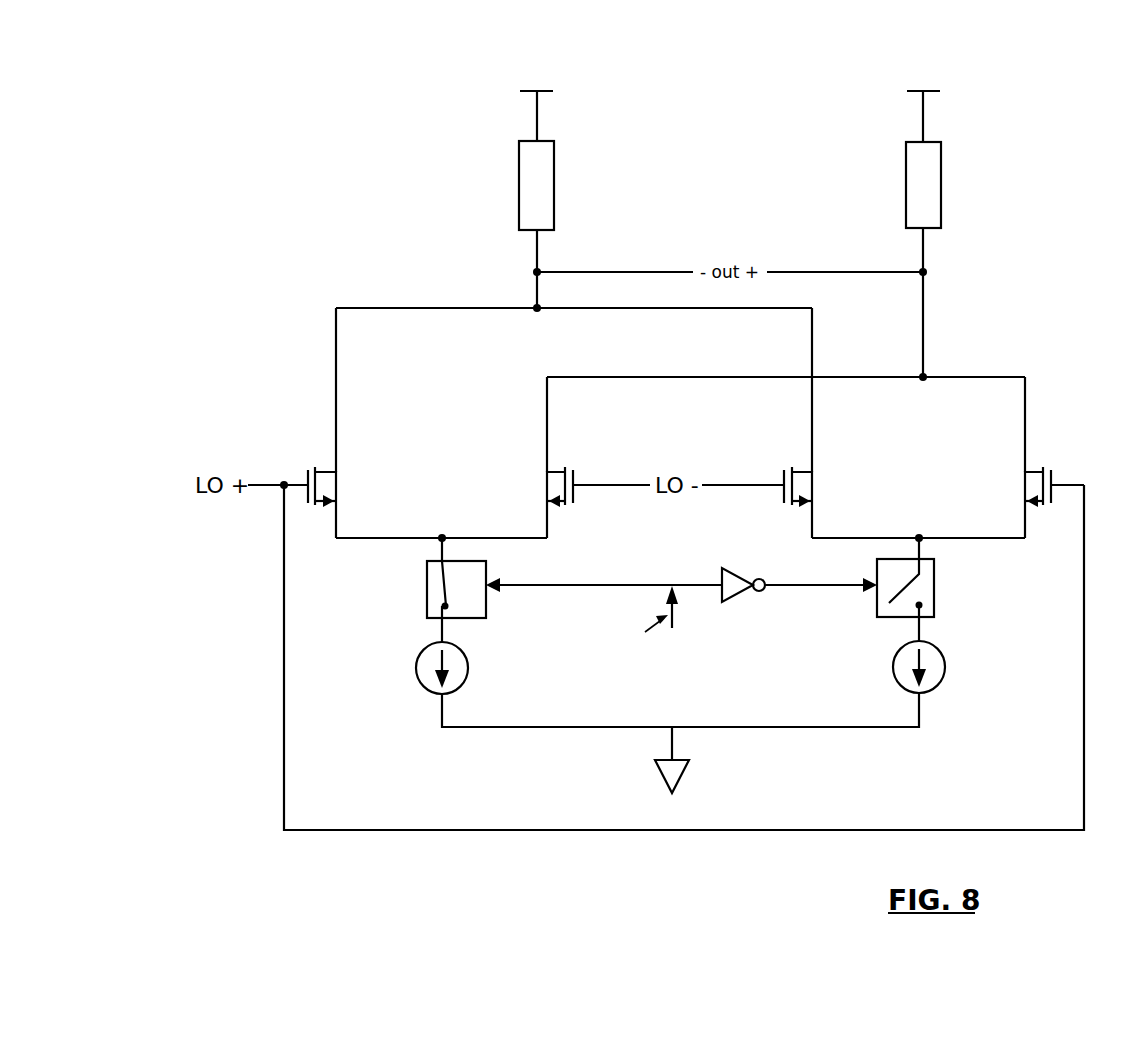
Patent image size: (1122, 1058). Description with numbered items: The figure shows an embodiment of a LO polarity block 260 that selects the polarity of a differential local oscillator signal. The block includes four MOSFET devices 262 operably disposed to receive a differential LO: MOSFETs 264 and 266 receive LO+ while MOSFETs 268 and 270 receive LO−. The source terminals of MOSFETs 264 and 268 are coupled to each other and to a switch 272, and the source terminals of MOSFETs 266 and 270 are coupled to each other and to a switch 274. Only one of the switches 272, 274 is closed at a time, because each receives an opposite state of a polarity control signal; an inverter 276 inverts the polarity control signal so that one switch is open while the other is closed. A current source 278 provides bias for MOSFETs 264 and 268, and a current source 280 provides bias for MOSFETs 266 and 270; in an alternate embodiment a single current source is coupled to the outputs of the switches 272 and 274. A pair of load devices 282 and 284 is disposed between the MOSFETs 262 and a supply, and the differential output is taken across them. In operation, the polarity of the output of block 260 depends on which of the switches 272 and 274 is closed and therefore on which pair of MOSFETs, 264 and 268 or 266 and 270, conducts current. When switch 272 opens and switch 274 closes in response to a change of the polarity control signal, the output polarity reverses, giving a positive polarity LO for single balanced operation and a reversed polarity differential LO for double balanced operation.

The LO polarity block 260 is at (350, 200).
The MOSFET devices 262 is at (168, 485).
The MOSFET 264 is at (322, 470).
The MOSFET 266 is at (1044, 470).
The MOSFET 268 is at (566, 470).
The MOSFET 270 is at (798, 470).
The switch 272 is at (486, 571).
The switch 274 is at (934, 583).
The inverter 276 is at (729, 567).
The current source 278 is at (456, 644).
The current source 280 is at (933, 641).
The load device 282 is at (555, 188).
The load device 284 is at (941, 176).